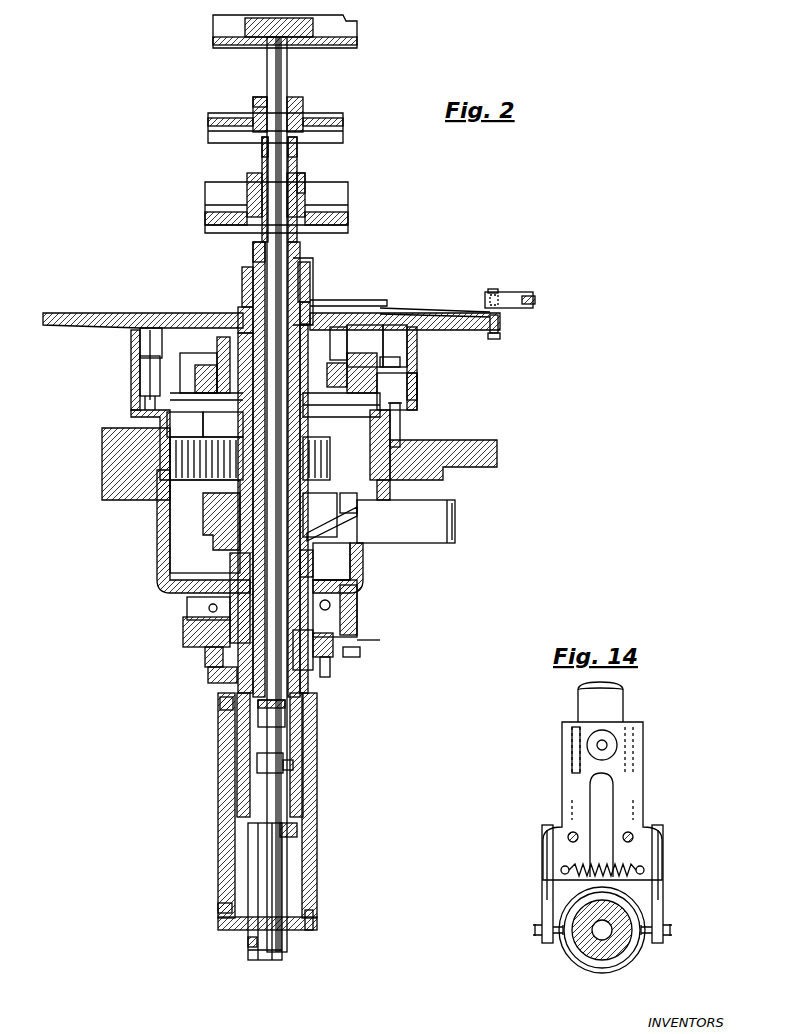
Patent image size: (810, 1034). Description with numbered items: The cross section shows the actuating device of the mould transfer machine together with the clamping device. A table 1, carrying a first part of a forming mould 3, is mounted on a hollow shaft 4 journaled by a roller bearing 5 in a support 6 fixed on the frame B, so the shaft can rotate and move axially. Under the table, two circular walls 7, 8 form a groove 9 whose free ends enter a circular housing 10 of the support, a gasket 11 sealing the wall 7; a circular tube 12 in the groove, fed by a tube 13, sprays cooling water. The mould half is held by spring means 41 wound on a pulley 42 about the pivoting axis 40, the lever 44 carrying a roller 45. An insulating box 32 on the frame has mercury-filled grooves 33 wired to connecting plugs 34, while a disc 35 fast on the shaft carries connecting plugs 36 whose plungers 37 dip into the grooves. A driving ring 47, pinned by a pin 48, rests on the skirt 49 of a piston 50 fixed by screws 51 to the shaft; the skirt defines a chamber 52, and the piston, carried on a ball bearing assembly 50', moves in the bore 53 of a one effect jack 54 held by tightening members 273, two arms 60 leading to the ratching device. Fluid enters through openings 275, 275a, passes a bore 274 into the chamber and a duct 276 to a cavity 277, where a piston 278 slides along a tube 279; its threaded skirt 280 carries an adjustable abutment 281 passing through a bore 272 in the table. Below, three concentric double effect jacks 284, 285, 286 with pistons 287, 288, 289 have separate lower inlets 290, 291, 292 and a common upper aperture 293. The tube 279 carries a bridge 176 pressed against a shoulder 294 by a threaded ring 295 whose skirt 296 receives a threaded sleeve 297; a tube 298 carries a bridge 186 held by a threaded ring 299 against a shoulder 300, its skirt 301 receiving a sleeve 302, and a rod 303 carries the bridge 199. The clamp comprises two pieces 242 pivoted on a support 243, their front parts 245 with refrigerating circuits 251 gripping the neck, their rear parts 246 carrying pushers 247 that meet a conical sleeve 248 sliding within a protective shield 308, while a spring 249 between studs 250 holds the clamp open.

In FIG. 2, the table 1 is at (462, 331).
In FIG. 2, the forming mould 3 is at (485, 300).
In FIG. 2, the hollow shaft 4 is at (347, 344).
In FIG. 2, the roller bearing 5 is at (327, 378).
In FIG. 2, the support 6 is at (374, 393).
In FIG. 2, the circular wall 7 is at (383, 340).
In FIG. 2, the circular wall 8 is at (419, 346).
In FIG. 2, the circular groove 9 is at (395, 346).
In FIG. 2, the circular housing 10 is at (417, 390).
In FIG. 2, the gasket 11 is at (400, 364).
In FIG. 2, the circular tube 12 is at (140, 350).
In FIG. 2, the tube 13 is at (140, 384).
In FIG. 2, the box 32 is at (348, 500).
In FIG. 2, the circular grooves 33 is at (203, 531).
In FIG. 2, the connecting plugs 34 is at (320, 515).
In FIG. 2, the disc 35 is at (370, 428).
In FIG. 2, the connecting plugs 36 is at (185, 424).
In FIG. 2, the plunger 37 is at (208, 435).
In FIG. 2, the pivoting axis 40 is at (500, 336).
In FIG. 2, the spring means 41 is at (420, 309).
In FIG. 2, the pulley 42 is at (498, 322).
In FIG. 2, the lever 44 is at (510, 292).
In FIG. 2, the roller 45 is at (535, 300).
In FIG. 2, the driving ring 47 is at (203, 515).
In FIG. 2, the pin 48 is at (340, 528).
In FIG. 2, the skirt 49 is at (337, 560).
In FIG. 2, the piston 50 is at (360, 638).
In FIG. 2, the ball bearing assembly 50' is at (388, 625).
In FIG. 2, the screws 51 is at (303, 650).
In FIG. 2, the chamber 52 is at (313, 567).
In FIG. 2, the bore 53 is at (330, 665).
In FIG. 2, the one effect jack 54 is at (333, 647).
In FIG. 2, the arms 60 is at (406, 521).
In FIG. 2, the frame B is at (497, 446).
In FIG. 2, the bridge 176 is at (348, 226).
In FIG. 2, the bridge 186 is at (343, 125).
In FIG. 2, the bridge 199 is at (348, 38).
In FIG. 2, the bore 272 is at (242, 292).
In FIG. 2, the tightening members 273 is at (357, 612).
In FIG. 2, the bore 274 is at (215, 638).
In FIG. 2, the opening 275 is at (205, 657).
In FIG. 2, the opening 275a is at (187, 608).
In FIG. 2, the duct 276 is at (230, 560).
In FIG. 2, the cavity 277 is at (335, 417).
In FIG. 2, the piston 278 is at (217, 345).
In FIG. 2, the tube 279 is at (297, 246).
In FIG. 2, the skirt 280 is at (313, 288).
In FIG. 2, the adjustable abutment 281 is at (310, 270).
In FIG. 2, the double effect jack 284 is at (310, 858).
In FIG. 2, the double effect jack 285 is at (303, 800).
In FIG. 2, the double effect jack 286 is at (268, 763).
In FIG. 2, the piston 287 is at (297, 830).
In FIG. 2, the piston 288 is at (293, 770).
In FIG. 2, the piston 289 is at (271, 720).
In FIG. 2, the inlet 290 is at (218, 908).
In FIG. 2, the inlet 291 is at (248, 942).
In FIG. 2, the inlet 292 is at (282, 958).
In FIG. 2, the aperture 293 is at (220, 703).
In FIG. 2, the shoulder 294 is at (253, 242).
In FIG. 2, the threaded ring 295 is at (305, 196).
In FIG. 2, the skirt 296 is at (247, 193).
In FIG. 2, the threaded sleeve 297 is at (305, 183).
In FIG. 2, the tube 298 is at (262, 152).
In FIG. 2, the threaded ring 299 is at (253, 105).
In FIG. 2, the shoulder 300 is at (297, 152).
In FIG. 2, the skirt 301 is at (262, 97).
In FIG. 2, the sleeve 302 is at (294, 97).
In FIG. 2, the rod 303 is at (287, 62).
In FIG. 14, the pieces 242 is at (630, 797).
In FIG. 14, the support 243 is at (566, 830).
In FIG. 14, the front part 245 is at (615, 745).
In FIG. 14, the rear part 246 is at (663, 905).
In FIG. 14, the pusher 247 is at (648, 945).
In FIG. 14, the conical sleeve 248 is at (585, 950).
In FIG. 14, the spring 249 is at (627, 847).
In FIG. 14, the studs 250 is at (561, 870).
In FIG. 14, the refrigerating circuits 251 is at (572, 737).
In FIG. 14, the protective shield 308 is at (555, 940).